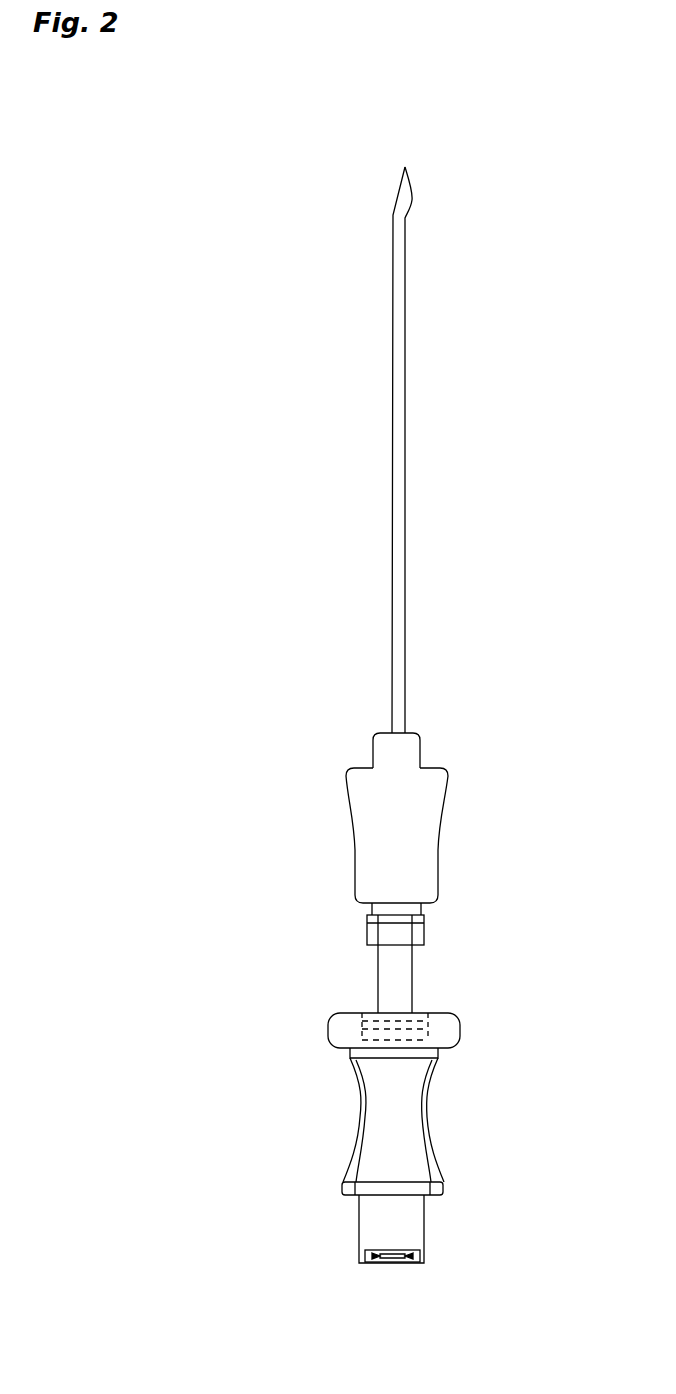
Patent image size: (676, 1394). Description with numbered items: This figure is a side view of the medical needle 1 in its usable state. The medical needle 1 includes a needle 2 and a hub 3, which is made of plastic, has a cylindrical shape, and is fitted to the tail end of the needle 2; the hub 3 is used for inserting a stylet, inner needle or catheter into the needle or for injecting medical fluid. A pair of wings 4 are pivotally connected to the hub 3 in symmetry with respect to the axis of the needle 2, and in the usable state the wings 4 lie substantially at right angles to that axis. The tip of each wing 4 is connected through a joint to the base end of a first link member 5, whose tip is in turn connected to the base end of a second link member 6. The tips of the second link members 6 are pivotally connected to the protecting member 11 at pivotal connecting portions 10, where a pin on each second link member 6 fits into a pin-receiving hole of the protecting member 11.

The medical needle 1 is at (412, 90).
The needle 2 is at (405, 472).
The hub 3 is at (425, 1130).
The wings 4 is at (460, 1027).
The first link members 5 is at (395, 1040).
The second link members 6 is at (412, 980).
The pivotal connecting portions 10 is at (424, 928).
The protecting member 11 is at (447, 772).